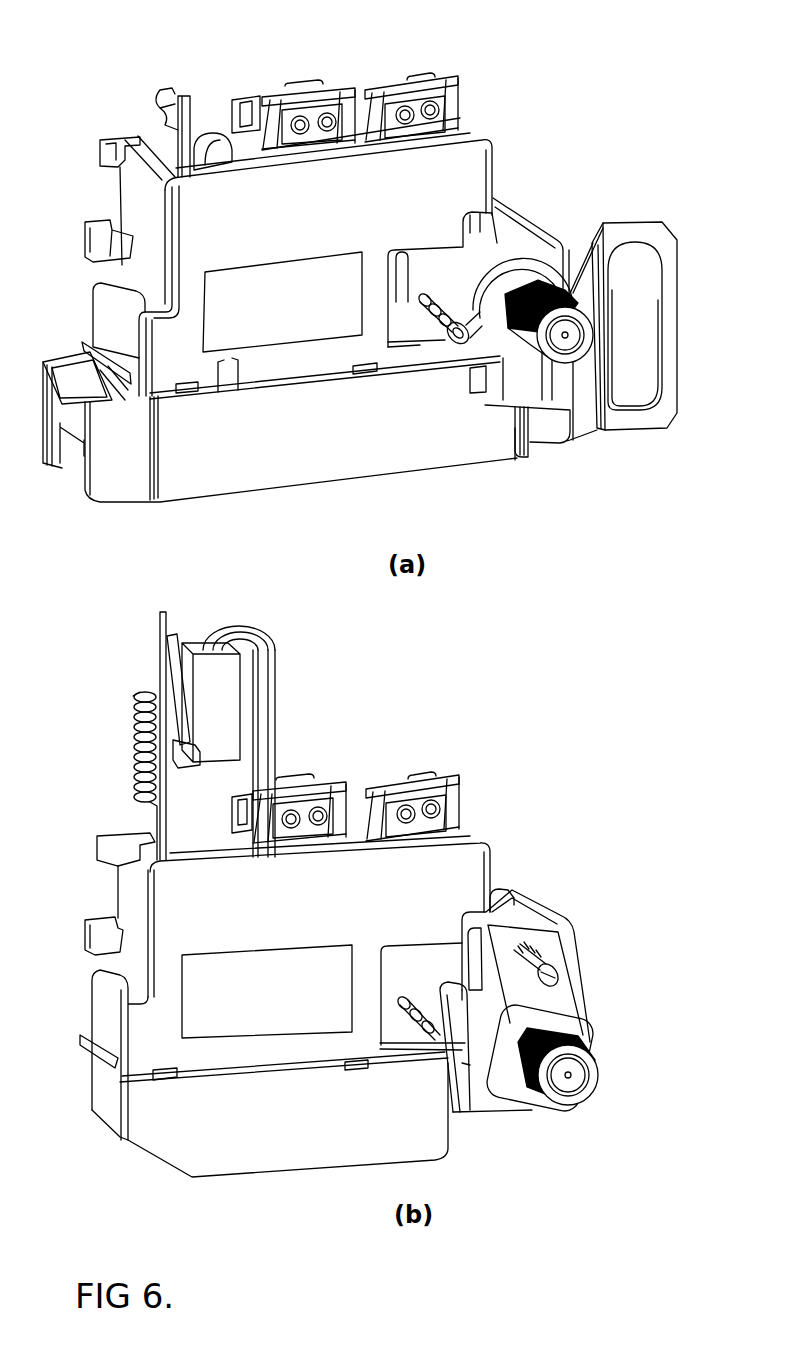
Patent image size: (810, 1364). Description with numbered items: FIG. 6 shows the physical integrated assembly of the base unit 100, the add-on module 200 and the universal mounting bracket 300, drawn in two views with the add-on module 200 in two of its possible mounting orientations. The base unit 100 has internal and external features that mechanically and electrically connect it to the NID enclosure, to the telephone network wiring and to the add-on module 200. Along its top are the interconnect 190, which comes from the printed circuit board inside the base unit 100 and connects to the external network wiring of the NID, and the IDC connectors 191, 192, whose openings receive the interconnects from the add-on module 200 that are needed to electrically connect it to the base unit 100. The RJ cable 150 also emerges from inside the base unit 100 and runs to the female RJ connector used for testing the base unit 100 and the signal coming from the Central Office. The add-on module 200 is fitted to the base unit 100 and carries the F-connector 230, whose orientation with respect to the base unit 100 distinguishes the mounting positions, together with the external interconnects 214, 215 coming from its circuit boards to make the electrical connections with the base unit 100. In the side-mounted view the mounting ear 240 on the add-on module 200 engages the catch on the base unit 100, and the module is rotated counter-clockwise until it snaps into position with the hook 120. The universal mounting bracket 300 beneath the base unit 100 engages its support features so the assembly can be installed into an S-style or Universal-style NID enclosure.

The base unit 100 is at (100, 192).
The snap fit hook 120 is at (505, 888).
The RJ cable 150 is at (207, 130).
The interconnect 190 is at (174, 92).
The IDC connector 191 is at (305, 82).
The IDC connector 192 is at (412, 70).
The add-on module 200 is at (515, 197).
The external interconnect 214 is at (456, 352).
The external interconnect 215 is at (466, 346).
The F-connector 230 is at (563, 280).
The mounting ear 240 is at (477, 1107).
The universal mounting bracket 300 is at (313, 487).